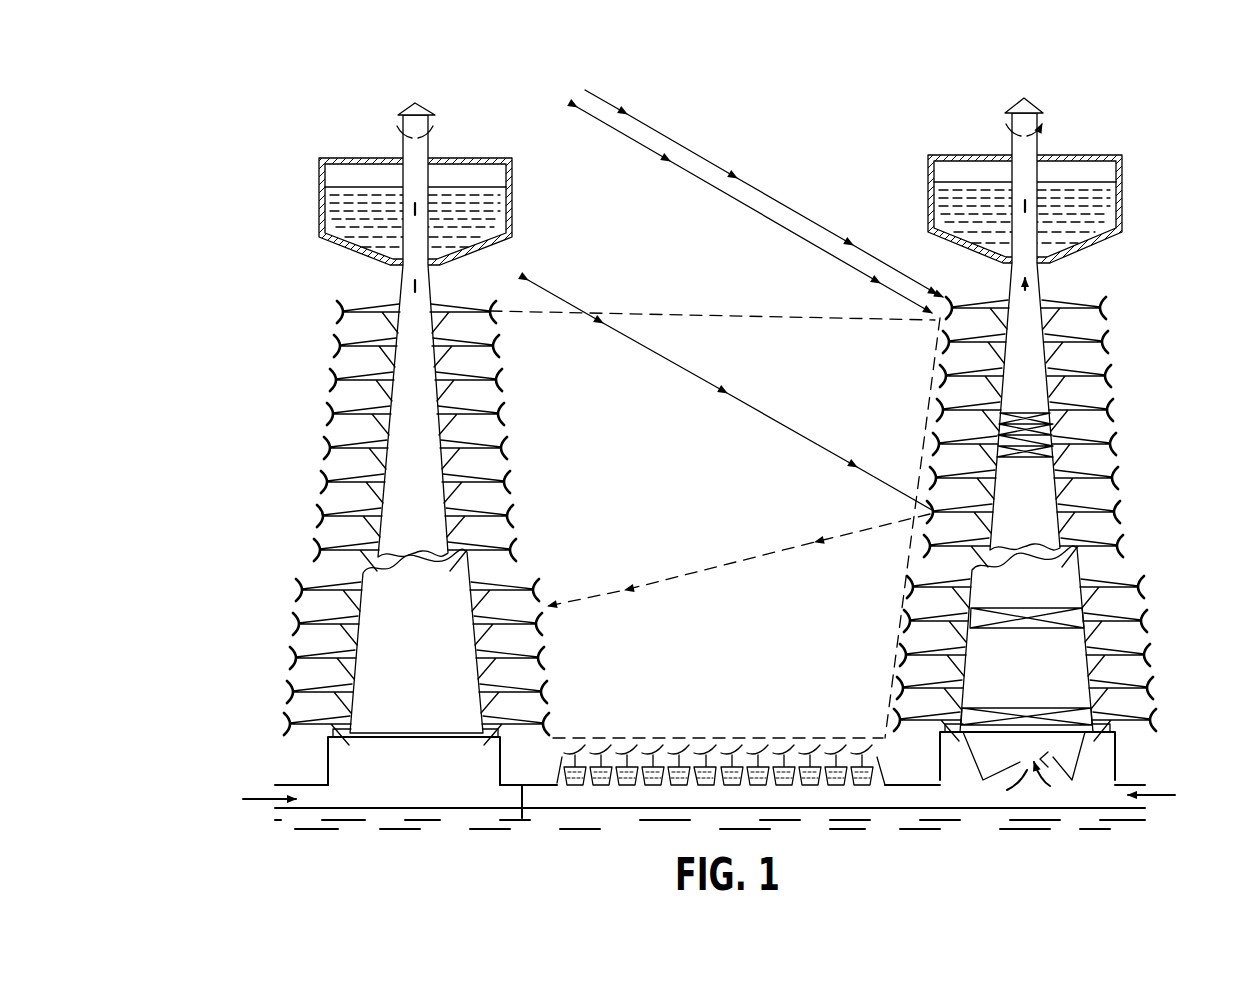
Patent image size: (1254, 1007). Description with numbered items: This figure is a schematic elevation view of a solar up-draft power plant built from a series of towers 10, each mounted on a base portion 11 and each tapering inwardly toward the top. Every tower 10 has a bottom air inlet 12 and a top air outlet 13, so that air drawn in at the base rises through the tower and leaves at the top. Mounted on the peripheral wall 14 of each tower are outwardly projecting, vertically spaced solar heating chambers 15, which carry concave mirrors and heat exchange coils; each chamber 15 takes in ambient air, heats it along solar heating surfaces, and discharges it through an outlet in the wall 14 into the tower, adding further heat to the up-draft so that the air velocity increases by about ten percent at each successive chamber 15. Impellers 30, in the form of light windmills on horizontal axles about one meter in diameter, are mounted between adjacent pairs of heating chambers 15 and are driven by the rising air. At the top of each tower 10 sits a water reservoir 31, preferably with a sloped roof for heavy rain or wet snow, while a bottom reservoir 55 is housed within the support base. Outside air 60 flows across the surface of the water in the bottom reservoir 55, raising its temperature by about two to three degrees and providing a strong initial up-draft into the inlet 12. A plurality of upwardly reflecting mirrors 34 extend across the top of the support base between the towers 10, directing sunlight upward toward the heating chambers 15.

The tower 10 is at (322, 331).
The base portion 11 is at (327, 763).
The bottom air inlet 12 is at (1042, 786).
The top air outlet 13 is at (1030, 101).
The peripheral wall 14 is at (455, 461).
The solar heating chamber 15 is at (1090, 374).
The impeller 30 is at (1085, 431).
The water reservoir 31 is at (1105, 195).
The upwardly reflecting mirror 34 is at (665, 750).
The bottom reservoir 55 is at (522, 785).
The outside air 60 is at (1163, 796).